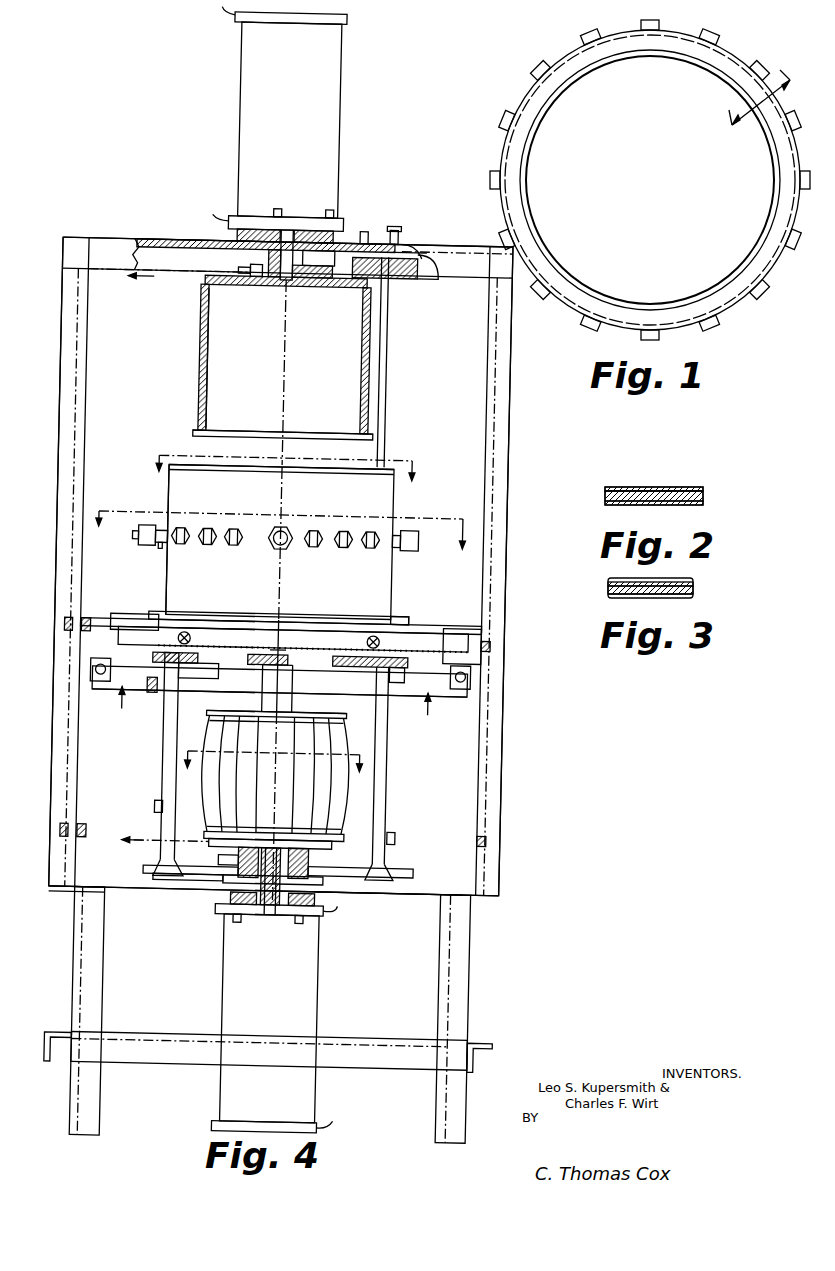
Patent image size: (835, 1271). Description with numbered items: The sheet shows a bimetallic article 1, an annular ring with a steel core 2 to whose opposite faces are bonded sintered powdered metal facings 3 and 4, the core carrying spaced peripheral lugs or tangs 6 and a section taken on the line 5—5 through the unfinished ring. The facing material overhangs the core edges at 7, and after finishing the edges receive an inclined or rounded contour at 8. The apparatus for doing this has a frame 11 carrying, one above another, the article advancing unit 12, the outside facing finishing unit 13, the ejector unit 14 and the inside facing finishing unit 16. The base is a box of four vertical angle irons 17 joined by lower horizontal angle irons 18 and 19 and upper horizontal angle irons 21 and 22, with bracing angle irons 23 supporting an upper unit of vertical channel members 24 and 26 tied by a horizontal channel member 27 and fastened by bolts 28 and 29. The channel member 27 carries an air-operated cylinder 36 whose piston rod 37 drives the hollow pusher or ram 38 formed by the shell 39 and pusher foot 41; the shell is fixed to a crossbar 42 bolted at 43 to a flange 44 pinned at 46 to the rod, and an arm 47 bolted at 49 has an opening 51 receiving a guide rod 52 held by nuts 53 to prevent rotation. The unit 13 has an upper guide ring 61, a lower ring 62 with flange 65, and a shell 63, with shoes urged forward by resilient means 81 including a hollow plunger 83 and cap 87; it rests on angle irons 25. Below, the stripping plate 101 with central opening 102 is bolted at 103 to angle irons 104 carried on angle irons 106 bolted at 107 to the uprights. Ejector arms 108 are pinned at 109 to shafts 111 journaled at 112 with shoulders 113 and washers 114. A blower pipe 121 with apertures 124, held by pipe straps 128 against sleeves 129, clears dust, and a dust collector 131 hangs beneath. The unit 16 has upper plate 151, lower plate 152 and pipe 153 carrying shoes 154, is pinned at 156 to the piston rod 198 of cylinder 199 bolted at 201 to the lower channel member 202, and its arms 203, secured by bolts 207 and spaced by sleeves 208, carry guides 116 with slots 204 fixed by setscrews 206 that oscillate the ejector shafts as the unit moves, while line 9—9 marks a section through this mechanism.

In FIG. 1, the bimetallic article 1 is at (572, 316).
In FIG. 2, the bimetallic article 1 is at (603, 487).
In FIG. 1, the core 2 is at (752, 87).
In FIG. 2, the core 2 is at (703, 497).
In FIG. 3, the core 2 is at (692, 598).
In FIG. 1, the facing 3 is at (760, 262).
In FIG. 2, the facing 3 is at (652, 488).
In FIG. 3, the facing 3 is at (616, 582).
In FIG. 2, the facing 4 is at (636, 505).
In FIG. 3, the facing 4 is at (616, 598).
In FIG. 4, the section line 5- 5 is at (164, 559).
In FIG. 1, the lugs or tangs 6 is at (712, 34).
In FIG. 4, the lugs or tangs 6 is at (279, 539).
In FIG. 2, the overhanging facing material 7 is at (702, 489).
In FIG. 4, the overhanging facing material 7 is at (272, 775).
In FIG. 3, the inclined or rounded edge contour 8 is at (690, 580).
In FIG. 4, the inclined or rounded edge contour 8 is at (283, 479).
In FIG. 4, the section line 9- 9 is at (274, 709).
In FIG. 4, the frame 11 is at (508, 468).
In FIG. 4, the article advancing unit 12 is at (338, 214).
In FIG. 4, the outside facing finishing unit 13 is at (402, 514).
In FIG. 4, the article ejecting unit 14 is at (395, 645).
In FIG. 4, the inside facing finishing unit 16 is at (384, 770).
In FIG. 4, the vertical angle irons 17 is at (82, 968).
In FIG. 4, the lower horizontal angle irons 18 is at (366, 1040).
In FIG. 4, the lower horizontal angle irons 19 is at (56, 1037).
In FIG. 4, the upper horizontal angle irons 21 is at (448, 625).
In FIG. 4, the upper horizontal angle irons 22 is at (82, 624).
In FIG. 4, the horizontal angle irons 23 is at (140, 812).
In FIG. 4, the vertical channel member 24 is at (500, 568).
In FIG. 4, the angle irons 25 is at (190, 614).
In FIG. 4, the vertical channel member 26 is at (75, 420).
In FIG. 4, the horizontal channel member 27 is at (443, 252).
In FIG. 4, the bolts 28 is at (492, 642).
In FIG. 4, the bolts 29 is at (66, 630).
In FIG. 4, the air-operated cylinder 36 is at (330, 68).
In FIG. 4, the piston rod 37 is at (292, 254).
In FIG. 4, the hollow pusher or ram 38 is at (186, 365).
In FIG. 4, the shell 39 is at (195, 328).
In FIG. 4, the pusher foot 41 is at (190, 434).
In FIG. 4, the crossbar 42 is at (200, 280).
In FIG. 4, the bolts 43 is at (305, 272).
In FIG. 4, the flange 44 is at (244, 266).
In FIG. 4, the pin 46 is at (266, 258).
In FIG. 4, the arm 47 is at (392, 236).
In FIG. 4, the bolt 49 is at (360, 235).
In FIG. 4, the opening 51 is at (392, 278).
In FIG. 4, the guide rod 52 is at (384, 348).
In FIG. 4, the nuts 53 is at (397, 244).
In FIG. 4, the upper annular guide ring 61 is at (262, 470).
In FIG. 4, the lower annular guide ring or base plate 62 is at (300, 604).
In FIG. 4, the annular shell 63 is at (167, 506).
In FIG. 4, the flange 65 is at (398, 614).
In FIG. 4, the resilient urging means 81 is at (401, 551).
In FIG. 4, the hollow plunger 83 is at (146, 528).
In FIG. 4, the cap 87 is at (133, 538).
In FIG. 4, the stripping plate 101 is at (400, 680).
In FIG. 4, the central opening 102 is at (330, 640).
In FIG. 4, the bolts 103 is at (155, 660).
In FIG. 4, the angle irons 104 is at (100, 686).
In FIG. 4, the angle irons 106 is at (472, 690).
In FIG. 4, the bolts 107 is at (473, 680).
In FIG. 4, the ejector arms 108 is at (350, 612).
In FIG. 4, the pin 109 is at (134, 625).
In FIG. 4, the shaft 111 is at (168, 768).
In FIG. 4, the journal 112 is at (208, 680).
In FIG. 4, the shoulder 113 is at (178, 668).
In FIG. 4, the washer 114 is at (160, 695).
In FIG. 4, the non-rotating guides 116 is at (322, 899).
In FIG. 4, the blower pipe 121 is at (358, 612).
In FIG. 4, the apertures 124 is at (296, 670).
In FIG. 4, the pipe strap 128 is at (278, 628).
In FIG. 4, the sleeve or washer 129 is at (278, 612).
In FIG. 4, the dust collector 131 is at (346, 706).
In FIG. 4, the upper circular plate 151 is at (212, 714).
In FIG. 4, the lower circular plate or base 152 is at (338, 844).
In FIG. 4, the circular pipe or shell 153 is at (320, 872).
In FIG. 4, the shoes 154 is at (336, 812).
In FIG. 4, the pin 156 is at (268, 864).
In FIG. 4, the piston rod 198 is at (268, 915).
In FIG. 4, the fluid-operated cylinder 199 is at (328, 996).
In FIG. 4, the bolts 201 is at (236, 916).
In FIG. 4, the lower channel member 202 is at (112, 896).
In FIG. 4, the arms 203 is at (178, 880).
In FIG. 4, the slot 204 is at (405, 892).
In FIG. 4, the setscrew 206 is at (362, 867).
In FIG. 4, the bolts 207 is at (222, 884).
In FIG. 4, the sleeves 208 is at (225, 862).